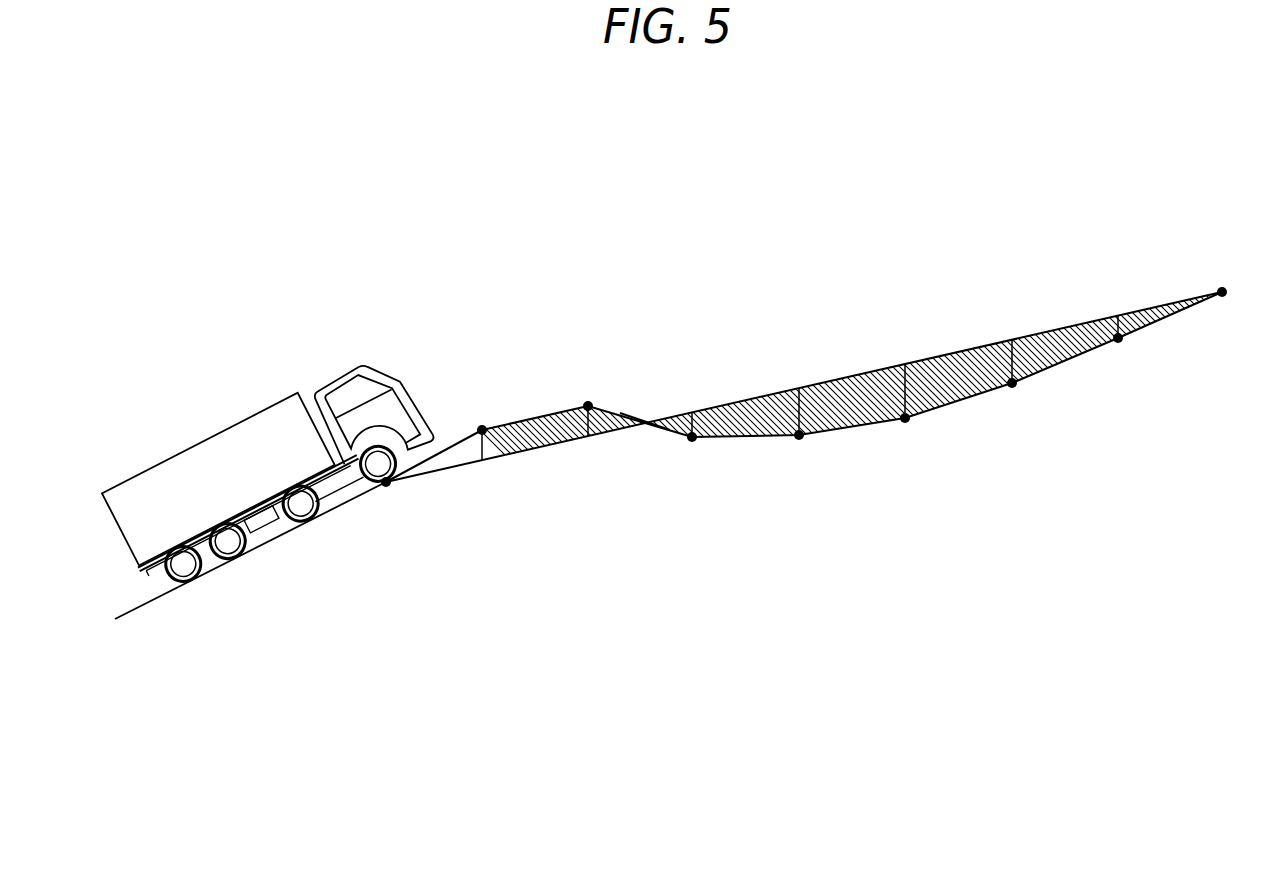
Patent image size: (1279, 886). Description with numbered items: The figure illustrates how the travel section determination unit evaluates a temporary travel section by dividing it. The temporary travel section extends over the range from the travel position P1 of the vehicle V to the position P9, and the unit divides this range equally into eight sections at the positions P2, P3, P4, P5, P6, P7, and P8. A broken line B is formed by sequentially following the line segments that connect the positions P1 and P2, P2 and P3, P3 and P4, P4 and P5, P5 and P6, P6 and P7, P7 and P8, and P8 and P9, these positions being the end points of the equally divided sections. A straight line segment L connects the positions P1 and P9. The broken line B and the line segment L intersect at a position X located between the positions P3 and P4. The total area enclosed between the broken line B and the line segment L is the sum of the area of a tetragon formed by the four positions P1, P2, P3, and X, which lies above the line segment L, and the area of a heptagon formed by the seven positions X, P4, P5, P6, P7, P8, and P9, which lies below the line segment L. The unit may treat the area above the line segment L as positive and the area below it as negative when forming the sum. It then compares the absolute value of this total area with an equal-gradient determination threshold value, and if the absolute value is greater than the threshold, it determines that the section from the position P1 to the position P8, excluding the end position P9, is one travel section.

The vehicle V is at (360, 367).
The broken line B is at (512, 424).
The line segment L is at (937, 357).
The position X is at (650, 420).
The travel position P1 is at (386, 498).
The position P2 is at (479, 428).
The position P3 is at (588, 403).
The position P4 is at (691, 443).
The position P5 is at (798, 430).
The position P6 is at (906, 410).
The position P7 is at (1011, 381).
The position P8 is at (1118, 347).
The position P9 is at (1224, 310).